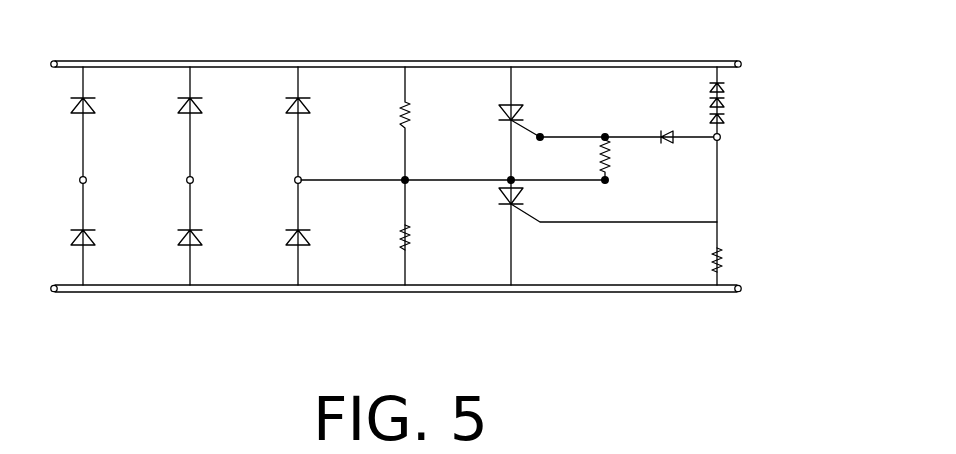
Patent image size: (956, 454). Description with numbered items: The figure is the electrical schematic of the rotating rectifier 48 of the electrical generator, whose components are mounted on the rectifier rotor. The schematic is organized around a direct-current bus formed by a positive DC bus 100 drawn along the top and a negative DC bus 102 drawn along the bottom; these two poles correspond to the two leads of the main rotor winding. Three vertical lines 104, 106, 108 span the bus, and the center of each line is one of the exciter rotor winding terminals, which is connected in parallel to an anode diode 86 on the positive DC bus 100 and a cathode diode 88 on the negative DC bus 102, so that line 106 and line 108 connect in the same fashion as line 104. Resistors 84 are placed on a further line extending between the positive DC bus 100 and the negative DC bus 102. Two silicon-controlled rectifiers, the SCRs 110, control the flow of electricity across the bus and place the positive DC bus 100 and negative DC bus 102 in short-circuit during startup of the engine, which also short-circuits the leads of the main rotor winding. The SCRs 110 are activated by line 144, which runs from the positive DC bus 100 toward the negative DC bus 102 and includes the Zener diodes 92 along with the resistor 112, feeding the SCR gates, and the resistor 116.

The rotating rectifier 48 is at (798, 79).
The positive DC bus 100 is at (463, 61).
The negative DC bus 102 is at (542, 294).
The resistors 84 is at (410, 118).
The anode diode 86 is at (72, 112).
The cathode diode 88 is at (72, 247).
The Zener diode 92 is at (725, 104).
The line 104 is at (84, 150).
The line 106 is at (192, 145).
The line 108 is at (300, 150).
The silicon-controlled rectifier 110 is at (523, 113).
The resistor 112 is at (612, 160).
The resistor 116 is at (725, 258).
The line 144 is at (720, 150).